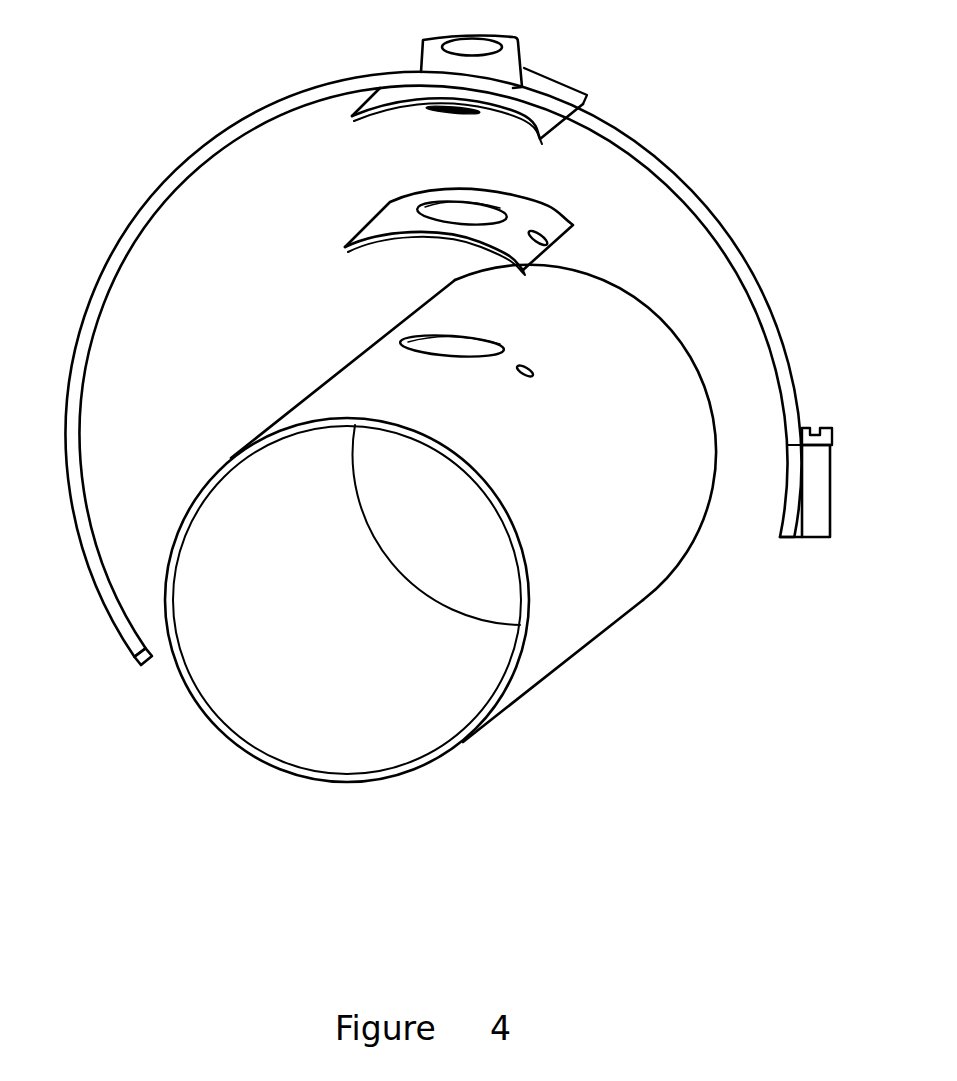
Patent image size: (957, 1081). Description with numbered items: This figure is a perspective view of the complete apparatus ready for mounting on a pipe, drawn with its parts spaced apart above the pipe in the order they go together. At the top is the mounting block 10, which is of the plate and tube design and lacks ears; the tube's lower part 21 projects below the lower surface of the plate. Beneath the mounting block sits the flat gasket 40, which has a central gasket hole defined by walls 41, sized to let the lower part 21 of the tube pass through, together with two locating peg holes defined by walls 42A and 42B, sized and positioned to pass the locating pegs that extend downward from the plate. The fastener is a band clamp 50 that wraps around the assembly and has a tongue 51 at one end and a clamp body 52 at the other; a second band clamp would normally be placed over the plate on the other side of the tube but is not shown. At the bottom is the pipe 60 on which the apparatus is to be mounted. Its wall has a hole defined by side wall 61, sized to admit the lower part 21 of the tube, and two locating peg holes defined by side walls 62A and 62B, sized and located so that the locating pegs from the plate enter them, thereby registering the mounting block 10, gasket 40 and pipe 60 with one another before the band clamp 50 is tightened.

The mounting block 10 is at (579, 73).
The lower part of the tube 21 is at (447, 110).
The flat gasket 40 is at (345, 246).
The walls defining the central gasket hole 41 is at (468, 203).
The walls defining a locating peg hole 42A is at (386, 212).
The walls defining a locating peg hole 42B is at (549, 234).
The band clamp 50 is at (118, 244).
The tongue 51 is at (140, 659).
The clamp body 52 is at (828, 484).
The pipe 60 is at (560, 663).
The side wall defining the pipe hole 61 is at (400, 347).
The side wall defining a locating peg hole 62A is at (379, 343).
The side wall defining a locating peg hole 62B is at (536, 364).